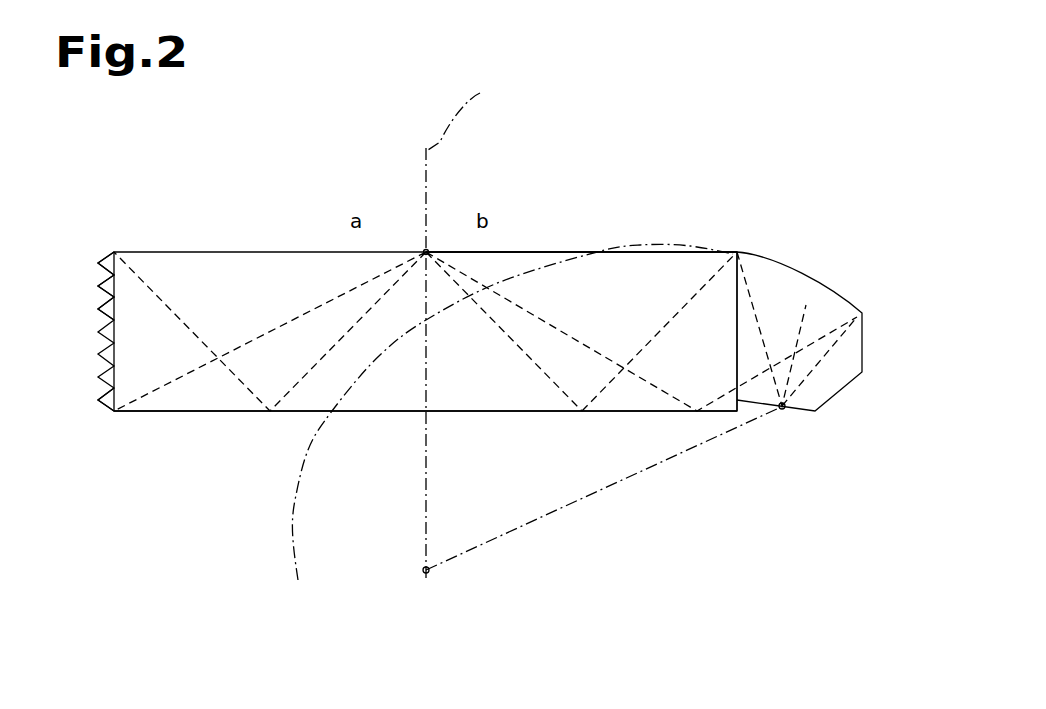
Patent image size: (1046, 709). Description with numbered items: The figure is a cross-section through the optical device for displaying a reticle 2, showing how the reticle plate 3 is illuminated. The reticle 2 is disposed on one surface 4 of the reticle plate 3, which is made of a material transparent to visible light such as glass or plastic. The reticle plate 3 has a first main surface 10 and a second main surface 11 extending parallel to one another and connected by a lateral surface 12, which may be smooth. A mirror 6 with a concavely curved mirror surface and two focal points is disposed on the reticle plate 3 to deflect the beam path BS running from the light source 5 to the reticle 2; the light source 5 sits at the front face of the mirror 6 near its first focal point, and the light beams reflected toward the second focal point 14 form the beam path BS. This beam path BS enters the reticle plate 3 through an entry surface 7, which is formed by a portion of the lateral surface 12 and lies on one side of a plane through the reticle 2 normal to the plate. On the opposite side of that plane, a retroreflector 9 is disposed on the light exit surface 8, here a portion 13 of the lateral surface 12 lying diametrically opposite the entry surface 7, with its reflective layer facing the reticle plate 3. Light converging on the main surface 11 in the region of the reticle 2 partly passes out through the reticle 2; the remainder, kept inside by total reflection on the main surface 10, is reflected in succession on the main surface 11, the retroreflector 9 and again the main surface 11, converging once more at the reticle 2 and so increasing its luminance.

The reticle 2 is at (426, 252).
The reticle plate 3 is at (273, 282).
The surface of the reticle plate 4 is at (570, 252).
The light source 5 is at (782, 420).
The mirror 6 is at (758, 256).
The entry surface 7 is at (728, 302).
The light exit surface 8 is at (112, 287).
The retroreflector 9 is at (91, 283).
The first main surface 10 is at (522, 253).
The second main surface 11 is at (497, 411).
The lateral surface 12 is at (743, 340).
The portion of the lateral surface 13 is at (98, 403).
The second focal point 14 is at (424, 571).
The beam path BS is at (694, 290).